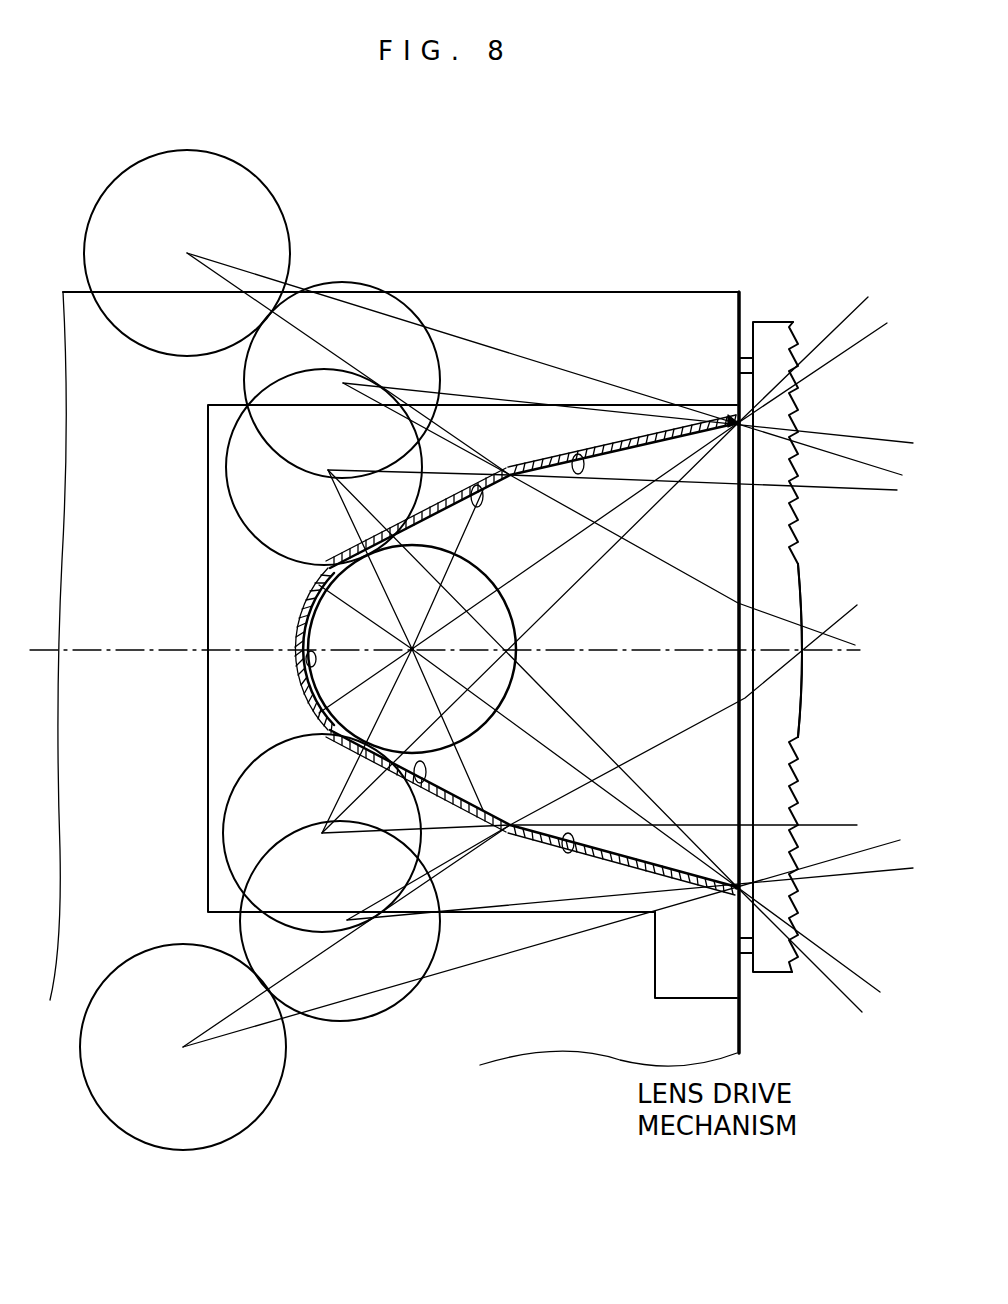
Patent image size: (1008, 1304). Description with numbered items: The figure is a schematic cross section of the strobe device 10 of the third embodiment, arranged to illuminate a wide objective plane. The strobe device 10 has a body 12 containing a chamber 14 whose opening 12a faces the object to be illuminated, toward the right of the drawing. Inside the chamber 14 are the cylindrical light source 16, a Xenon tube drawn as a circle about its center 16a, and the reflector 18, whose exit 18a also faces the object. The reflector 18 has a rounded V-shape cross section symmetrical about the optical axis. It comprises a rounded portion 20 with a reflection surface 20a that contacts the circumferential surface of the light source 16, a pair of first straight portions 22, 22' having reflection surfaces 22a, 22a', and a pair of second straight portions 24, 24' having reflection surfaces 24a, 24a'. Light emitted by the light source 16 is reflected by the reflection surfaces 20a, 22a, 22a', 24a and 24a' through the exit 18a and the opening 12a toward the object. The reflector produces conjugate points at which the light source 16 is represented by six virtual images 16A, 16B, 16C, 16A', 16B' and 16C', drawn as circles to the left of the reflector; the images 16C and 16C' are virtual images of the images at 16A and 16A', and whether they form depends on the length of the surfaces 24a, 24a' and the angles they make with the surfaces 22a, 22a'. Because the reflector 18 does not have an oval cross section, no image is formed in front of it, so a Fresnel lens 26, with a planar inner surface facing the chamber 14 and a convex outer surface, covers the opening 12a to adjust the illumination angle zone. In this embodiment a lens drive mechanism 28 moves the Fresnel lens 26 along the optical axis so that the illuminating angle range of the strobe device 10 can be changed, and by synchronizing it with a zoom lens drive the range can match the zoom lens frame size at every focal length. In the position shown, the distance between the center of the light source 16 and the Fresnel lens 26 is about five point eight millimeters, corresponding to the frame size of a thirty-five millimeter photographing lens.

The strobe device 10 is at (571, 281).
The body 12 is at (690, 303).
The opening 12a is at (710, 410).
The chamber 14 is at (207, 611).
The light source 16 is at (495, 567).
The center of the light source 16a is at (412, 648).
The virtual image 16A is at (320, 481).
The virtual image 16B is at (299, 380).
The virtual image 16C is at (183, 274).
The virtual image 16A' is at (274, 833).
The virtual image 16B' is at (290, 921).
The virtual image 16C' is at (173, 1035).
The reflector 18 is at (480, 670).
The exit 18a is at (712, 537).
The rounded portion 20 is at (307, 703).
The reflection surface 20a is at (306, 660).
The first straight portion 22 is at (418, 518).
The reflection surface 22a is at (492, 462).
The first straight portion 22' is at (418, 814).
The reflection surface 22a' is at (379, 817).
The second straight portion 24 is at (623, 418).
The reflection surface 24a is at (577, 443).
The second straight portion 24' is at (622, 902).
The reflection surface 24a' is at (553, 864).
The Fresnel lens 26 is at (775, 337).
The lens drive mechanism 28 is at (670, 999).